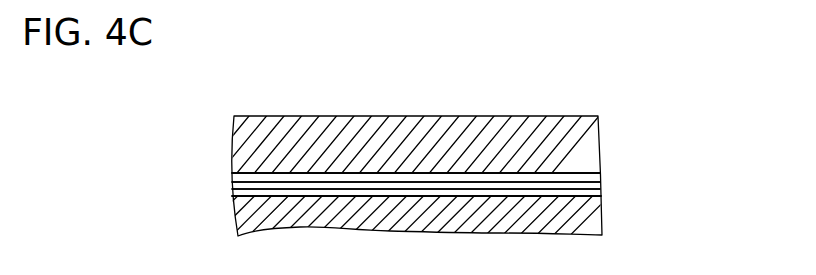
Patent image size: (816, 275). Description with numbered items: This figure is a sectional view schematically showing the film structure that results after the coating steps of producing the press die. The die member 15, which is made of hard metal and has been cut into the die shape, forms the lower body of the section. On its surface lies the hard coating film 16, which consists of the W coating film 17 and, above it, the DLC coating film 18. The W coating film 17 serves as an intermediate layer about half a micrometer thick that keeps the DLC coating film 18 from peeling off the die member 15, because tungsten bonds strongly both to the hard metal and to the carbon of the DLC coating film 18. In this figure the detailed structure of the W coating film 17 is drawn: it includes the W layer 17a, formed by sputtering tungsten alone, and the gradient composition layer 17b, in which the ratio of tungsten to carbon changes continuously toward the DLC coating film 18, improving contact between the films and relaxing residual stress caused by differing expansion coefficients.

The die member 15 is at (600, 217).
The hard coating film 16 is at (677, 110).
The W coating film 17 is at (601, 192).
The W layer 17a is at (232, 192).
The gradient composition layer 17b is at (232, 178).
The DLC coating film 18 is at (599, 143).